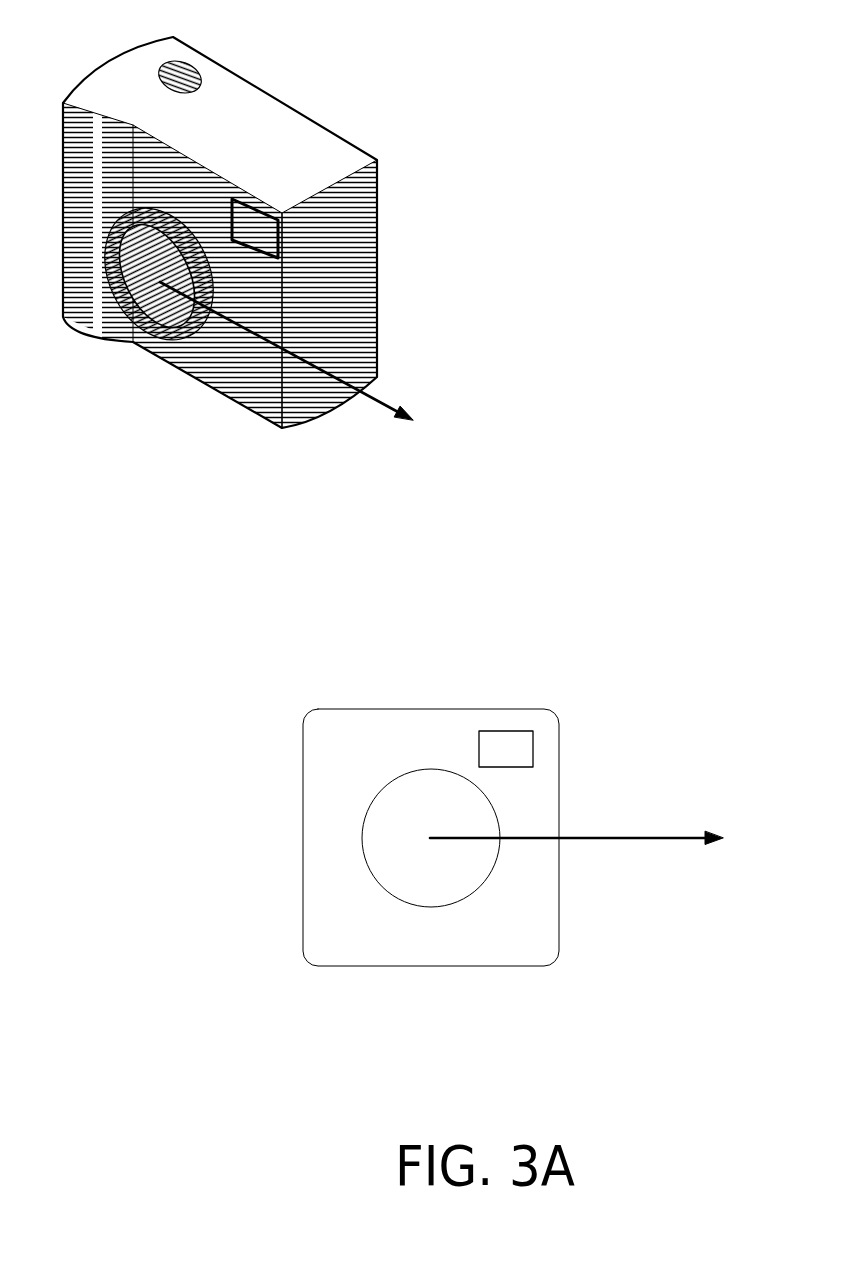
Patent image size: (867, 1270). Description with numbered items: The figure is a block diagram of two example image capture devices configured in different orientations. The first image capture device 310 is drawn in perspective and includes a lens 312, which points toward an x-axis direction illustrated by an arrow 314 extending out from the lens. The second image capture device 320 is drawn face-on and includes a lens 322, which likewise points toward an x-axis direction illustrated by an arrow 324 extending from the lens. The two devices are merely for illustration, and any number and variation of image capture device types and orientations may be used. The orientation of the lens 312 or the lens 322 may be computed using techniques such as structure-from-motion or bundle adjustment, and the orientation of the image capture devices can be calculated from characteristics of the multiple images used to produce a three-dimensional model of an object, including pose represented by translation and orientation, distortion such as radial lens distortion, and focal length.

The image capture device 310 is at (255, 133).
The lens 312 is at (183, 328).
The arrow 314 is at (383, 401).
The image capture device 320 is at (430, 709).
The lens 322 is at (478, 890).
The arrow 324 is at (677, 840).